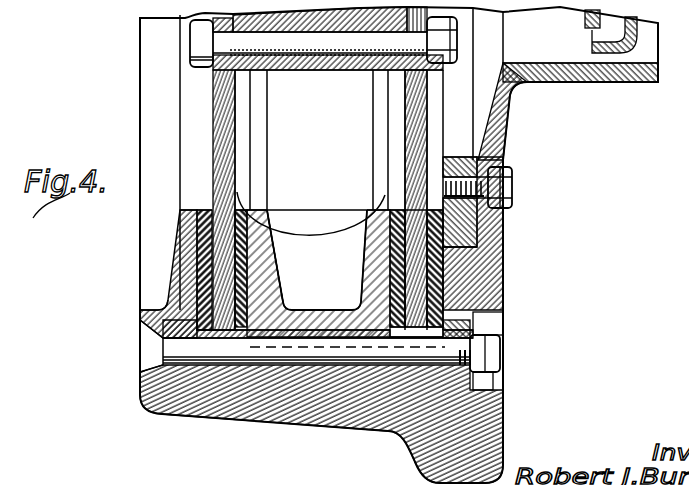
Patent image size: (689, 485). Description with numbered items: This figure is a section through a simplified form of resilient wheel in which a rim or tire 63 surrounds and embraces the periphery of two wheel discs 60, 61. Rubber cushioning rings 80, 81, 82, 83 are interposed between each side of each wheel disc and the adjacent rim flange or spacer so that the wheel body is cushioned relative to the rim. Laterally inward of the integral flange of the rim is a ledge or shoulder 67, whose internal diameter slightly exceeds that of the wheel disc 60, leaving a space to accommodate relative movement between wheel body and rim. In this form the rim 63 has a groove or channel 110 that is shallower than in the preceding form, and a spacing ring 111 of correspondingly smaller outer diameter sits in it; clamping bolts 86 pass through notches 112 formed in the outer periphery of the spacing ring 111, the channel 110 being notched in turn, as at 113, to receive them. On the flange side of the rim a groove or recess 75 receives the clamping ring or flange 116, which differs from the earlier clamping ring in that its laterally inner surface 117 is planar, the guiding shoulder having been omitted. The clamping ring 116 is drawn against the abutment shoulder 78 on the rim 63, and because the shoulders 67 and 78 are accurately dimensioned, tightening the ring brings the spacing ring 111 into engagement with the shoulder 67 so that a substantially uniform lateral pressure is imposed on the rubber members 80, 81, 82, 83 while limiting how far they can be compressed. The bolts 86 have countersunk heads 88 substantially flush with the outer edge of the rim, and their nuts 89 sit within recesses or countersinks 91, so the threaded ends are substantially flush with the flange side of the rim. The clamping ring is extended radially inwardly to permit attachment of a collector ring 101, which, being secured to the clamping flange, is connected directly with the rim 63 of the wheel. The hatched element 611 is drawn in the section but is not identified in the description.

The wheel disc 60 is at (230, 95).
The wheel disc 61 is at (410, 85).
The housing flange 611 is at (180, 243).
The rubber cushioning ring 80 is at (207, 210).
The rubber cushioning ring 81 is at (245, 210).
The rubber cushioning ring 82 is at (397, 210).
The rubber cushioning ring 83 is at (440, 215).
The collector ring 101 is at (557, 82).
The ledge or shoulder 67 is at (275, 280).
The notches 112 is at (283, 305).
The groove or channel 110 is at (349, 309).
The spacing ring 111 is at (270, 235).
The clamping ring or flange 116 is at (490, 258).
The laterally inner surface 117 is at (448, 296).
The countersunk head 88 is at (145, 343).
The notch 113 is at (220, 355).
The nut 89 is at (503, 370).
The recess or countersink 91 is at (495, 385).
The groove or recess 75 is at (495, 400).
The clamping bolt 86 is at (195, 418).
The rim or tire 63 is at (220, 420).
The shoulder 78 is at (392, 432).